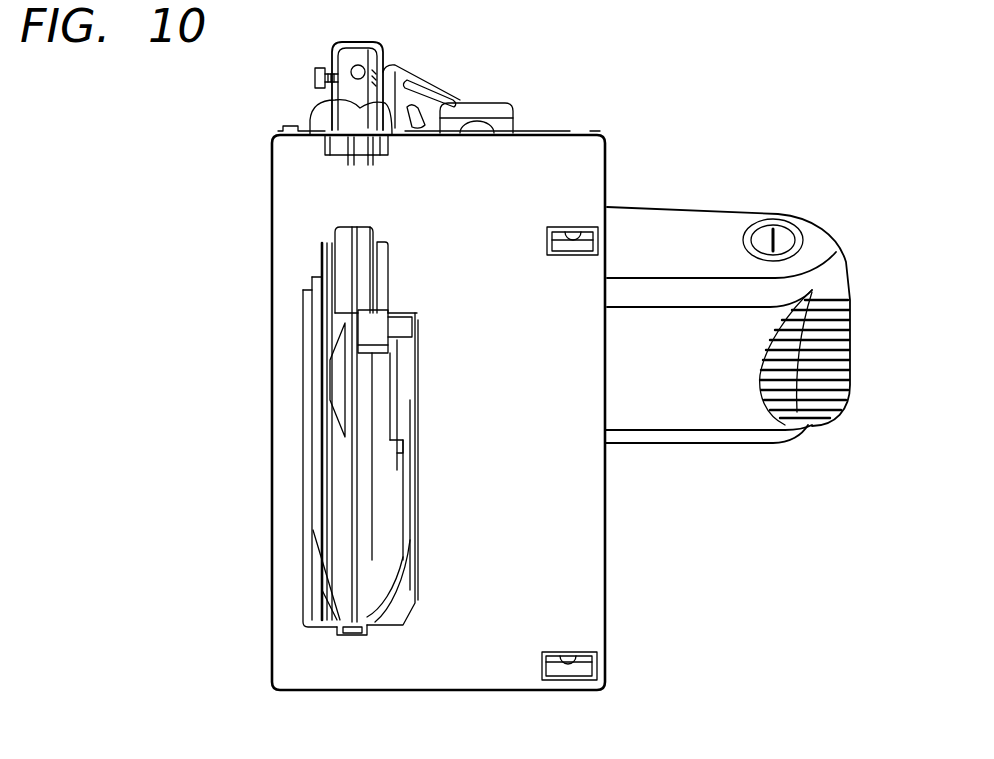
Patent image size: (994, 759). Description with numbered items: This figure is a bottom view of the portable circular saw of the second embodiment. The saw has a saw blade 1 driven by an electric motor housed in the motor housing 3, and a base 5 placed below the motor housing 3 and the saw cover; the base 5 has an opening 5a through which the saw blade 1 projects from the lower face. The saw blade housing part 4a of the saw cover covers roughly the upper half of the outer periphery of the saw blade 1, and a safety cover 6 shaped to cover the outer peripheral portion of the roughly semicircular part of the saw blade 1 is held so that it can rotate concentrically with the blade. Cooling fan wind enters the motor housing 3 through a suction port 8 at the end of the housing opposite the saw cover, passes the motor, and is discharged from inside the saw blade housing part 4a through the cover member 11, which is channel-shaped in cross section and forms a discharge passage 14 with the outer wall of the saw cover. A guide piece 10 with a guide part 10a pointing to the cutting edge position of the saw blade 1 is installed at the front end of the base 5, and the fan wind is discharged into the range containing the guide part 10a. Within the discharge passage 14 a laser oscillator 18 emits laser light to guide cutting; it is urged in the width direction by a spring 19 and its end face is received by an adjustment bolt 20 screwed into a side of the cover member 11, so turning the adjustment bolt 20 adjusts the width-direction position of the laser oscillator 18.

The saw blade 1 is at (350, 560).
The motor housing 3 is at (683, 395).
The saw blade housing part 4a is at (318, 114).
The base 5 is at (553, 590).
The opening 5a is at (345, 263).
The safety cover 6 is at (313, 488).
The suction port 8 is at (848, 325).
The guide piece 10 is at (325, 140).
The guide part 10a is at (352, 155).
The cover member 11 is at (383, 48).
The discharge passage 14 is at (363, 48).
The laser oscillator 18 is at (351, 68).
The spring 19 is at (388, 70).
The adjustment bolt 20 is at (315, 76).